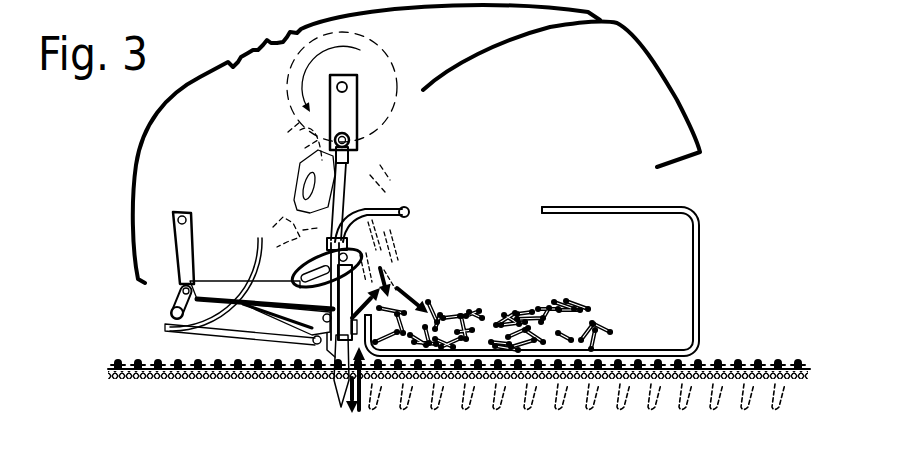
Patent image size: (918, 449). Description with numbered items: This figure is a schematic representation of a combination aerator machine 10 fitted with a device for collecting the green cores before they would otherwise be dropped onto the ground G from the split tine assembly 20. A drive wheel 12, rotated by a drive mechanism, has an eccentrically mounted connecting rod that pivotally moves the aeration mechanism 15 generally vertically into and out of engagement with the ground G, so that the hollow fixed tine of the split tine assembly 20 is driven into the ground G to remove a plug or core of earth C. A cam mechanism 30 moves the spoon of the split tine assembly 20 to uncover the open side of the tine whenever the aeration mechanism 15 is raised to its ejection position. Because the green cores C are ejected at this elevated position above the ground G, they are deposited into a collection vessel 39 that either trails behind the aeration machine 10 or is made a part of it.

The aeration machine 10 is at (128, 124).
The drive wheel 12 is at (388, 55).
The aeration mechanism 15 is at (155, 338).
The split tine assembly 20 is at (360, 253).
The cam mechanism 30 is at (155, 300).
The collection vessel 39 is at (700, 272).
The green core C is at (574, 294).
The ground G is at (744, 370).